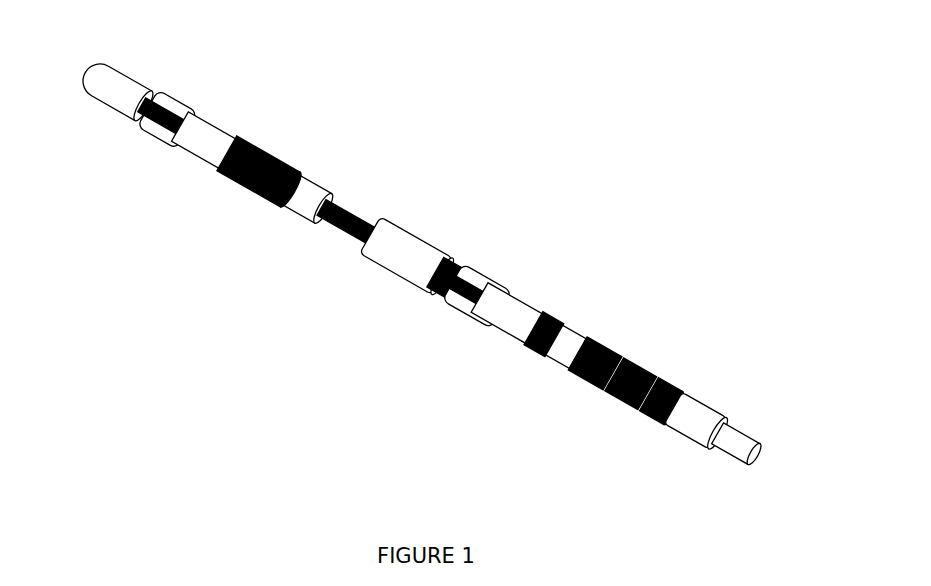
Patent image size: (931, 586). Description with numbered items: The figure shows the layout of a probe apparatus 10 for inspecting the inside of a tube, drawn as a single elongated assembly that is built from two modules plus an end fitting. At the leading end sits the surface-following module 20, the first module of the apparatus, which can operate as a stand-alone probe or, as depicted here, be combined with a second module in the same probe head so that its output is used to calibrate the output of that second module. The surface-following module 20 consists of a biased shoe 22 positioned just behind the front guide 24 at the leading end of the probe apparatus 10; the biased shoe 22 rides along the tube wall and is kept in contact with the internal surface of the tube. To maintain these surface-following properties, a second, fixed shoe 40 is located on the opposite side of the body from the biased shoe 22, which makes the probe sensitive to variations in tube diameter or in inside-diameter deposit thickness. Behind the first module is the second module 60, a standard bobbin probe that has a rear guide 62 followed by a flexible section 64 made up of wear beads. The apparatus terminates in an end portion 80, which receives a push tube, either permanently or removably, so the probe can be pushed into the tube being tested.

The probe apparatus 10 is at (708, 340).
The surface-following module 20 is at (297, 142).
The biased shoe 22 is at (270, 142).
The front guide 24 is at (107, 108).
The fixed shoe 40 is at (240, 188).
The second module 60 is at (527, 282).
The rear guide 62 is at (497, 330).
The flexible section 64 is at (648, 420).
The end portion 80 is at (720, 455).